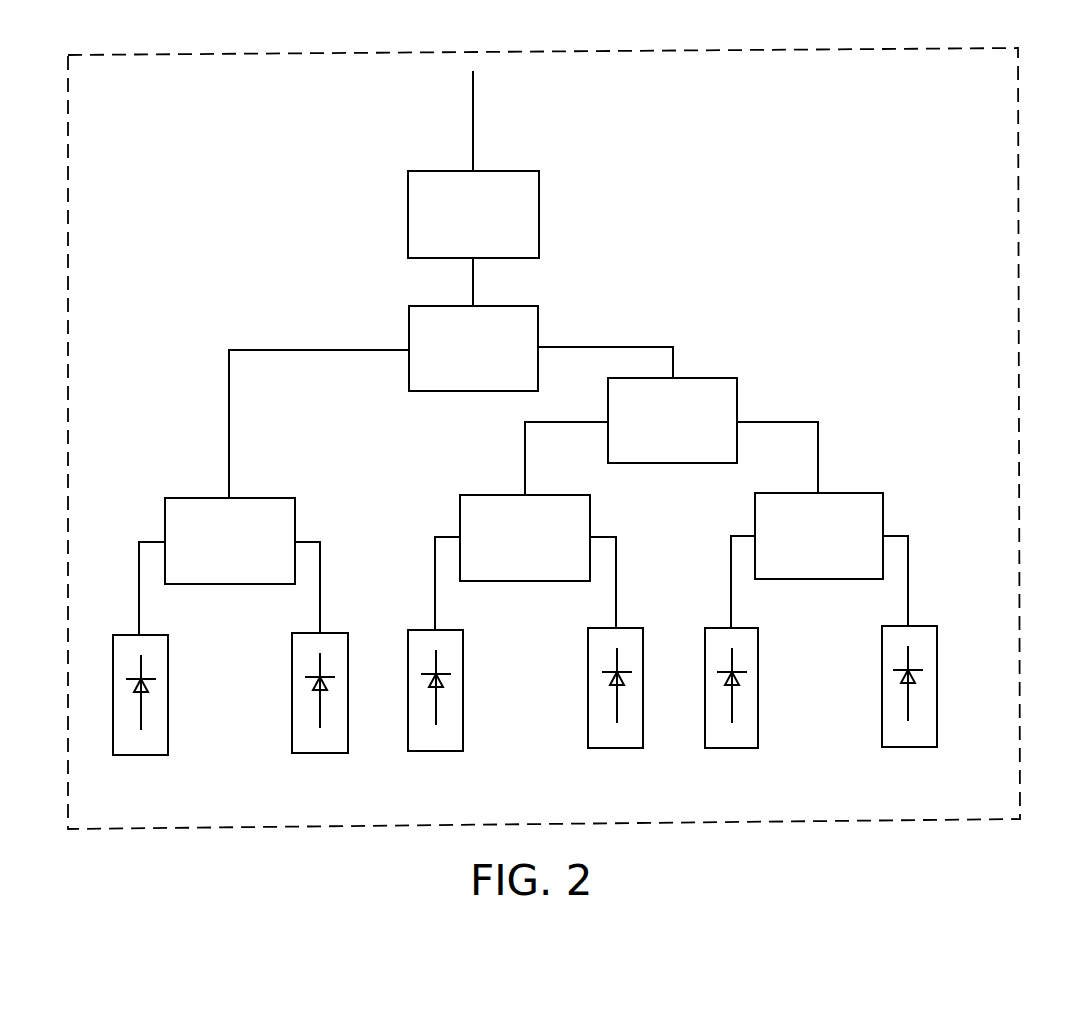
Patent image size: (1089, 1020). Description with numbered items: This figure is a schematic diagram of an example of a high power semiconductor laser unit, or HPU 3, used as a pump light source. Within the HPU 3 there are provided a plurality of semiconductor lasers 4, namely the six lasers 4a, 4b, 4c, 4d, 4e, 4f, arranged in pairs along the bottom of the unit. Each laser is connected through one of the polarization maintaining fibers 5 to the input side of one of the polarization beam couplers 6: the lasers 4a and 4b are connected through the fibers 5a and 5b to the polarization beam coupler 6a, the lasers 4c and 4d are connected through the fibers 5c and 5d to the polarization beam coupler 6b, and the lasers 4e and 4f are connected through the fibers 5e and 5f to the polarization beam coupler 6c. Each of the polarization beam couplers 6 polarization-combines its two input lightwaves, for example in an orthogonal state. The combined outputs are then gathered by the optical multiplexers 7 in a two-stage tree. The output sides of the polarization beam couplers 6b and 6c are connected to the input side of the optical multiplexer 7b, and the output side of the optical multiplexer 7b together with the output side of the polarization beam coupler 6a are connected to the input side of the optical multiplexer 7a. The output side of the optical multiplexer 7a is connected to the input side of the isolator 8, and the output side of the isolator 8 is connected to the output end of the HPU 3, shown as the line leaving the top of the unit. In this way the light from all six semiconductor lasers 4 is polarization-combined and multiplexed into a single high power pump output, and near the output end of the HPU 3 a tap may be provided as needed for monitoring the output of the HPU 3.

The high power semiconductor laser unit 3 is at (1020, 287).
The semiconductor lasers 4 is at (525, 724).
The semiconductor laser 4a is at (139, 755).
The semiconductor laser 4b is at (318, 753).
The semiconductor laser 4c is at (437, 751).
The semiconductor laser 4d is at (615, 748).
The semiconductor laser 4e is at (732, 748).
The semiconductor laser 4f is at (907, 747).
The polarization maintaining fibers 5 is at (569, 585).
The polarization maintaining fiber 5a is at (139, 613).
The polarization maintaining fiber 5b is at (320, 613).
The polarization maintaining fiber 5c is at (435, 610).
The polarization maintaining fiber 5d is at (616, 610).
The polarization maintaining fiber 5e is at (731, 607).
The polarization maintaining fiber 5f is at (908, 607).
The polarization beam couplers 6 is at (540, 508).
The polarization beam coupler 6a is at (189, 498).
The polarization beam coupler 6b is at (484, 495).
The polarization beam coupler 6c is at (848, 493).
The optical multiplexers 7 is at (531, 400).
The optical multiplexer 7a is at (538, 322).
The optical multiplexer 7b is at (737, 397).
The isolator 8 is at (539, 212).